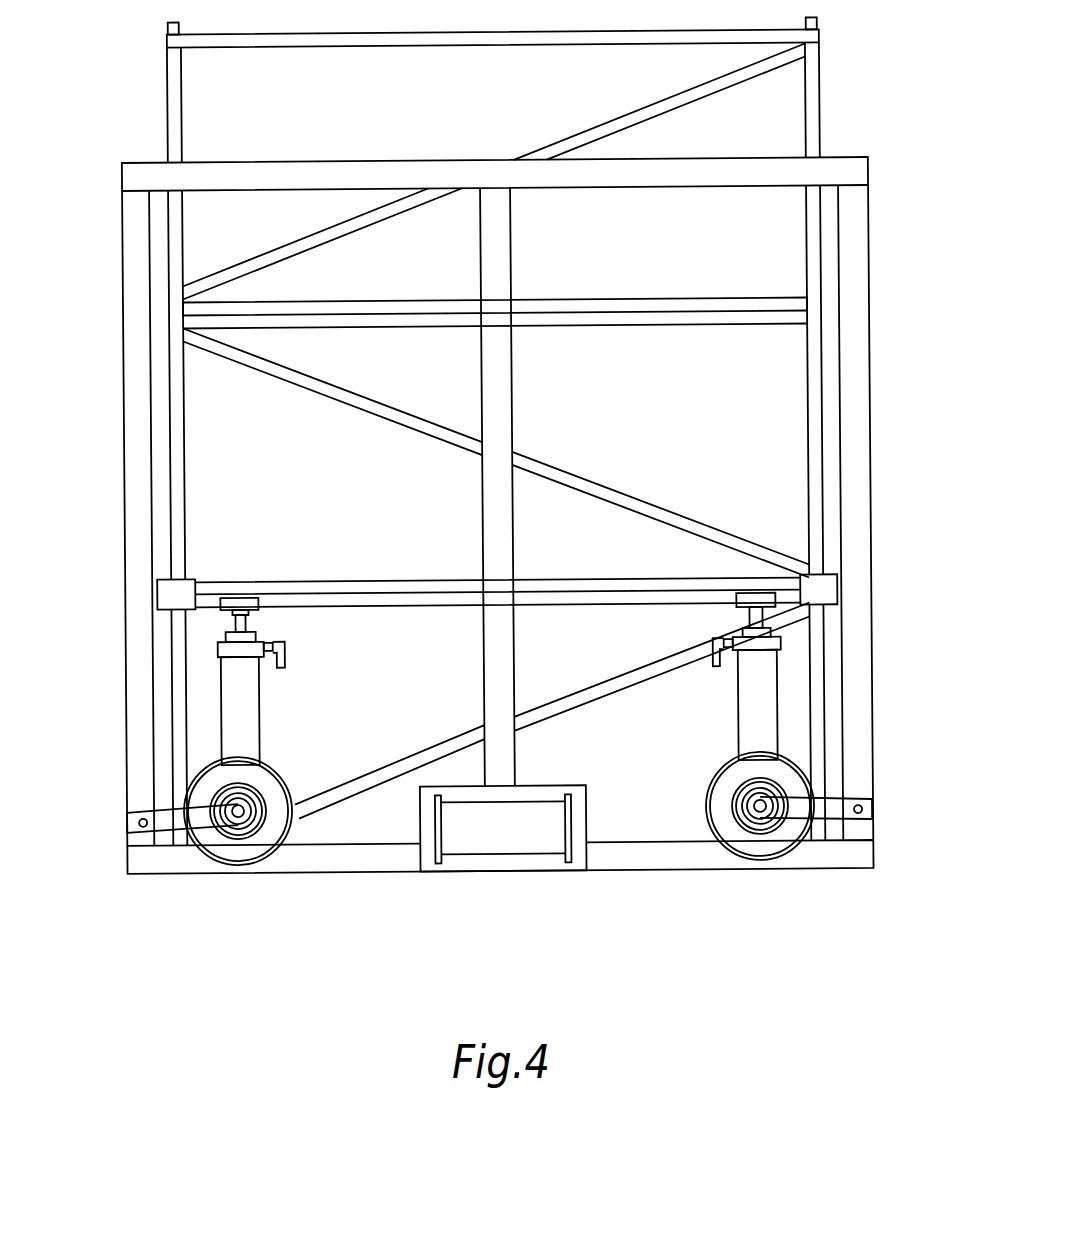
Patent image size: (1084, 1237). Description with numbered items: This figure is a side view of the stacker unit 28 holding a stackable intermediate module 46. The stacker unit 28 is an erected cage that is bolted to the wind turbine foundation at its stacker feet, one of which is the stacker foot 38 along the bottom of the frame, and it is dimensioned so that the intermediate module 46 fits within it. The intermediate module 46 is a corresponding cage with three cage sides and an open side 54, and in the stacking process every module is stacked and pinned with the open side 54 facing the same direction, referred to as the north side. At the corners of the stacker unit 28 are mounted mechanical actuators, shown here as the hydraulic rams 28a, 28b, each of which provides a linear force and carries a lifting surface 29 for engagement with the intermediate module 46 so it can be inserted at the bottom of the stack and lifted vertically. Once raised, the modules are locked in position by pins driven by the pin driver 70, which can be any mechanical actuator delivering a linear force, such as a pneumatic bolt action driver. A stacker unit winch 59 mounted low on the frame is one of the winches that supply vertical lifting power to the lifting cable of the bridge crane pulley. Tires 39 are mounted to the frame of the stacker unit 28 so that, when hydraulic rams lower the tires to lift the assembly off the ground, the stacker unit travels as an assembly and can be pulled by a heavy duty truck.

The stacker unit 28 is at (463, 499).
The hydraulic ram 28a is at (746, 714).
The hydraulic ram 28b is at (258, 703).
The lifting surface 29 is at (258, 610).
The stacker foot 38 is at (626, 843).
The tire 39 is at (268, 768).
The stackable intermediate module 46 is at (492, 32).
The open side 54 is at (556, 423).
The stacker unit winch 59 is at (542, 800).
The pin driver 70 is at (200, 574).